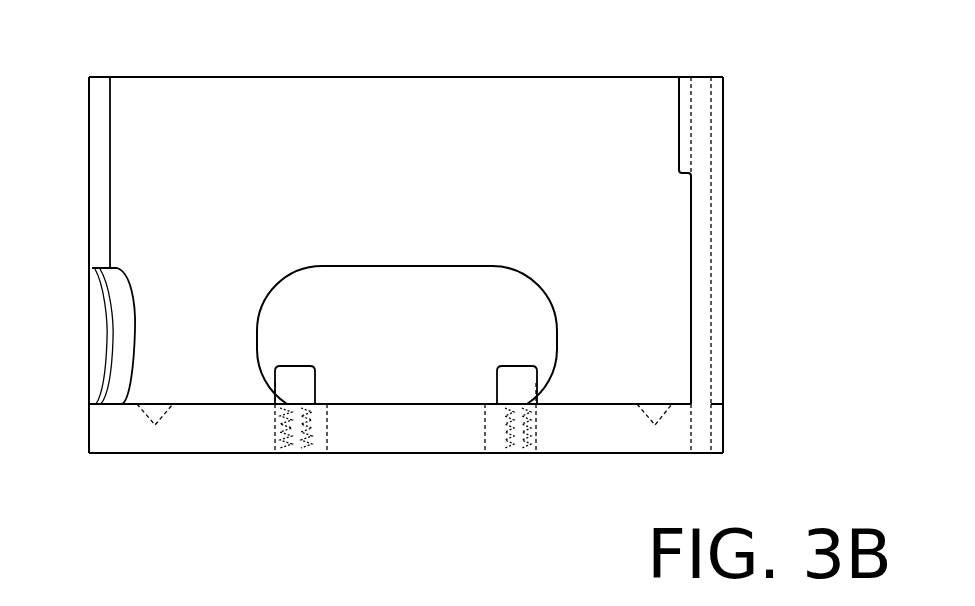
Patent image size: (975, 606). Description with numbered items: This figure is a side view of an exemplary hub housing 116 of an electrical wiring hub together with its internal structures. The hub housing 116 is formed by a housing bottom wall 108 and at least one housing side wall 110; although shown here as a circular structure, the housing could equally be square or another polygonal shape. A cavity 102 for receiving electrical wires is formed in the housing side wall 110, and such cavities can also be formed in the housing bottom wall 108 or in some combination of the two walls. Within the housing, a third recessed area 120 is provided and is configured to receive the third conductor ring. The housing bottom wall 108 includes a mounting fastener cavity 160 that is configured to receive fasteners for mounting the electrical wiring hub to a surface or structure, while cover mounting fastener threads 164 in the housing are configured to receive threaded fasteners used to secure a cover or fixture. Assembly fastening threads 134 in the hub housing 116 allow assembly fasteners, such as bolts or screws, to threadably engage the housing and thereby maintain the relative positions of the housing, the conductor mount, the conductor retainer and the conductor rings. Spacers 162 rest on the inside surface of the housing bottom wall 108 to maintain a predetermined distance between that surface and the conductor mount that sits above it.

The cavity 102 is at (100, 333).
The housing bottom wall 108 is at (200, 442).
The housing side wall 110 is at (100, 73).
The hub housing 116 is at (725, 100).
The third recessed area 120 is at (657, 402).
The assembly fastening threads 134 is at (515, 450).
The mounting fastener cavity 160 is at (703, 431).
The spacer 162 is at (303, 383).
The cover mounting fastener threads 164 is at (705, 75).